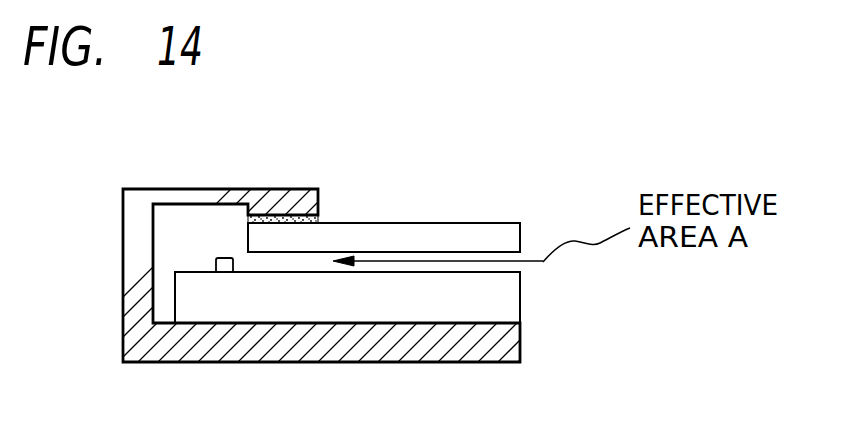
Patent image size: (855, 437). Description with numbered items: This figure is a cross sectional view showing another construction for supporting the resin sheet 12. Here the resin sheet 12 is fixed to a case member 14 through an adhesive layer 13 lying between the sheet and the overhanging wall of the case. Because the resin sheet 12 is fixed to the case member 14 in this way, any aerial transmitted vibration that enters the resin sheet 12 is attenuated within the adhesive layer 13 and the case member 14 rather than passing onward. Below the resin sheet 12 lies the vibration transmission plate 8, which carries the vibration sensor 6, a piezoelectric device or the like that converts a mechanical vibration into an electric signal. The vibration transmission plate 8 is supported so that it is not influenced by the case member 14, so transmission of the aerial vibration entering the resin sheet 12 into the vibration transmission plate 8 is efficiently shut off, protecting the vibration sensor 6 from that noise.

The case member 14 is at (316, 351).
The adhesive layer 13 is at (320, 222).
The resin sheet 12 is at (499, 232).
The vibration transmission plate 8 is at (512, 305).
The vibration sensor 6 is at (228, 258).